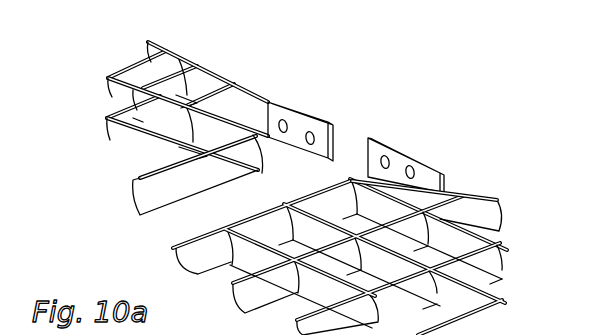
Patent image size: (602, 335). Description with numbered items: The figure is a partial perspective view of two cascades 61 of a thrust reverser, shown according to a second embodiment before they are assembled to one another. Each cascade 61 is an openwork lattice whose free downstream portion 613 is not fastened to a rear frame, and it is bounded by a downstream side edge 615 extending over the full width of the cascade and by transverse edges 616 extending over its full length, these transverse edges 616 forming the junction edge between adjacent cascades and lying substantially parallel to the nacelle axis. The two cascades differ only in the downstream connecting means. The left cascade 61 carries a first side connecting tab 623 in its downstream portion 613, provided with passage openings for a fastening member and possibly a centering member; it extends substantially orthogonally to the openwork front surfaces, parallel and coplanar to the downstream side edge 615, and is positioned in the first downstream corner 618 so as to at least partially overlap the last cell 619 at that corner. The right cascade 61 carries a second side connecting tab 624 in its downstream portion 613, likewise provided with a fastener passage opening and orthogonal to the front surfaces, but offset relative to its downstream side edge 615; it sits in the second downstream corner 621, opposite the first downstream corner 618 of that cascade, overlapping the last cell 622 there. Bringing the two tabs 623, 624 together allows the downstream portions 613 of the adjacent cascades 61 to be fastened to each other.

The cascade 61 is at (301, 174).
The downstream portion 613 is at (140, 31).
The downstream side edge 615 is at (203, 85).
The transverse edge 616 is at (200, 253).
The first downstream corner 618 is at (464, 147).
The last cell 619 is at (239, 90).
The second downstream corner 621 is at (297, 101).
The last cell 622 is at (453, 195).
The first side connecting tab 623 is at (300, 123).
The second side connecting tab 624 is at (400, 168).